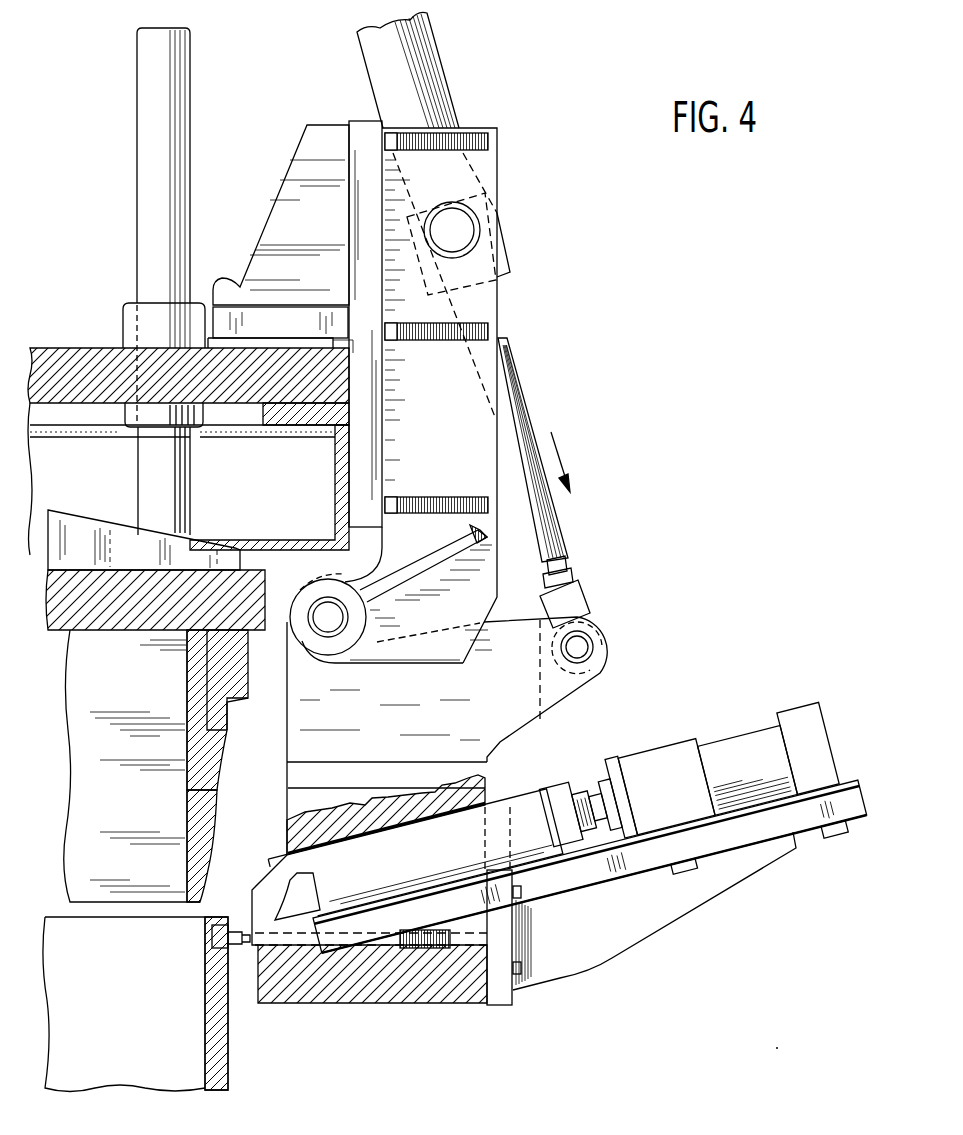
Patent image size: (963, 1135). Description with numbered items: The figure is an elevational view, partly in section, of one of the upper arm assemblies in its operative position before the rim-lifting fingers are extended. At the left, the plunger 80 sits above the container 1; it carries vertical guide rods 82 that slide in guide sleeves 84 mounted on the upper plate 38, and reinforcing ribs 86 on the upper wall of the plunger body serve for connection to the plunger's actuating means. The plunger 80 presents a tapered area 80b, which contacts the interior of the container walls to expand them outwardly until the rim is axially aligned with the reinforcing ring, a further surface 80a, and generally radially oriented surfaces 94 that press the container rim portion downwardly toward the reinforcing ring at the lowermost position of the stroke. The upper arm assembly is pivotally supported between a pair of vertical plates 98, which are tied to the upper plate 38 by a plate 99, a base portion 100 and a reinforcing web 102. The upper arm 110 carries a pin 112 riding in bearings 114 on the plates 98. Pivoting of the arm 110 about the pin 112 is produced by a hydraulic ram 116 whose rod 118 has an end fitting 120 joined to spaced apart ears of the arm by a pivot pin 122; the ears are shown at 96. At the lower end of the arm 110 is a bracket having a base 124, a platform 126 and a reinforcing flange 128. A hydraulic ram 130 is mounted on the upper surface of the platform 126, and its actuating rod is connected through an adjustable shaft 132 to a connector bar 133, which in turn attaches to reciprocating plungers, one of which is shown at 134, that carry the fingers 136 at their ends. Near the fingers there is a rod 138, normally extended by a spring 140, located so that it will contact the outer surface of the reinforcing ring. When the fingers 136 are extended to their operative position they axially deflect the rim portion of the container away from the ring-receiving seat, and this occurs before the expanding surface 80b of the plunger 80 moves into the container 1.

The container 1 is at (222, 1063).
The upper plate 38 is at (96, 355).
The plunger 80 is at (118, 710).
The lower tapered surface 80a is at (218, 826).
The tapered area 80b is at (226, 775).
The vertical guide rods 82 is at (147, 173).
The guide sleeves 84 is at (128, 318).
The reinforcing ribs 86 is at (75, 527).
The radially oriented surfaces 94 is at (240, 708).
The link arm 96 is at (530, 733).
The vertical plates 98 is at (470, 372).
The plate 99 is at (368, 353).
The base portion 100 is at (240, 307).
The reinforcing web 102 is at (288, 182).
The upper arm 110 is at (359, 747).
The pin 112 is at (323, 613).
The bearings 114 is at (306, 625).
The hydraulic ram 116 is at (425, 97).
The rod 118 is at (513, 428).
The end fitting 120 is at (575, 597).
The pivot pin 122 is at (592, 648).
The base 124 is at (498, 992).
The platform 126 is at (735, 832).
The reinforcing flange 128 is at (670, 912).
The hydraulic ram 130 is at (758, 777).
The adjustable shaft 132 is at (596, 798).
The connector bar 133 is at (555, 806).
The slide plate 134 is at (403, 873).
The fingers 136 is at (300, 890).
The rod 138 is at (245, 952).
The spring 140 is at (420, 950).